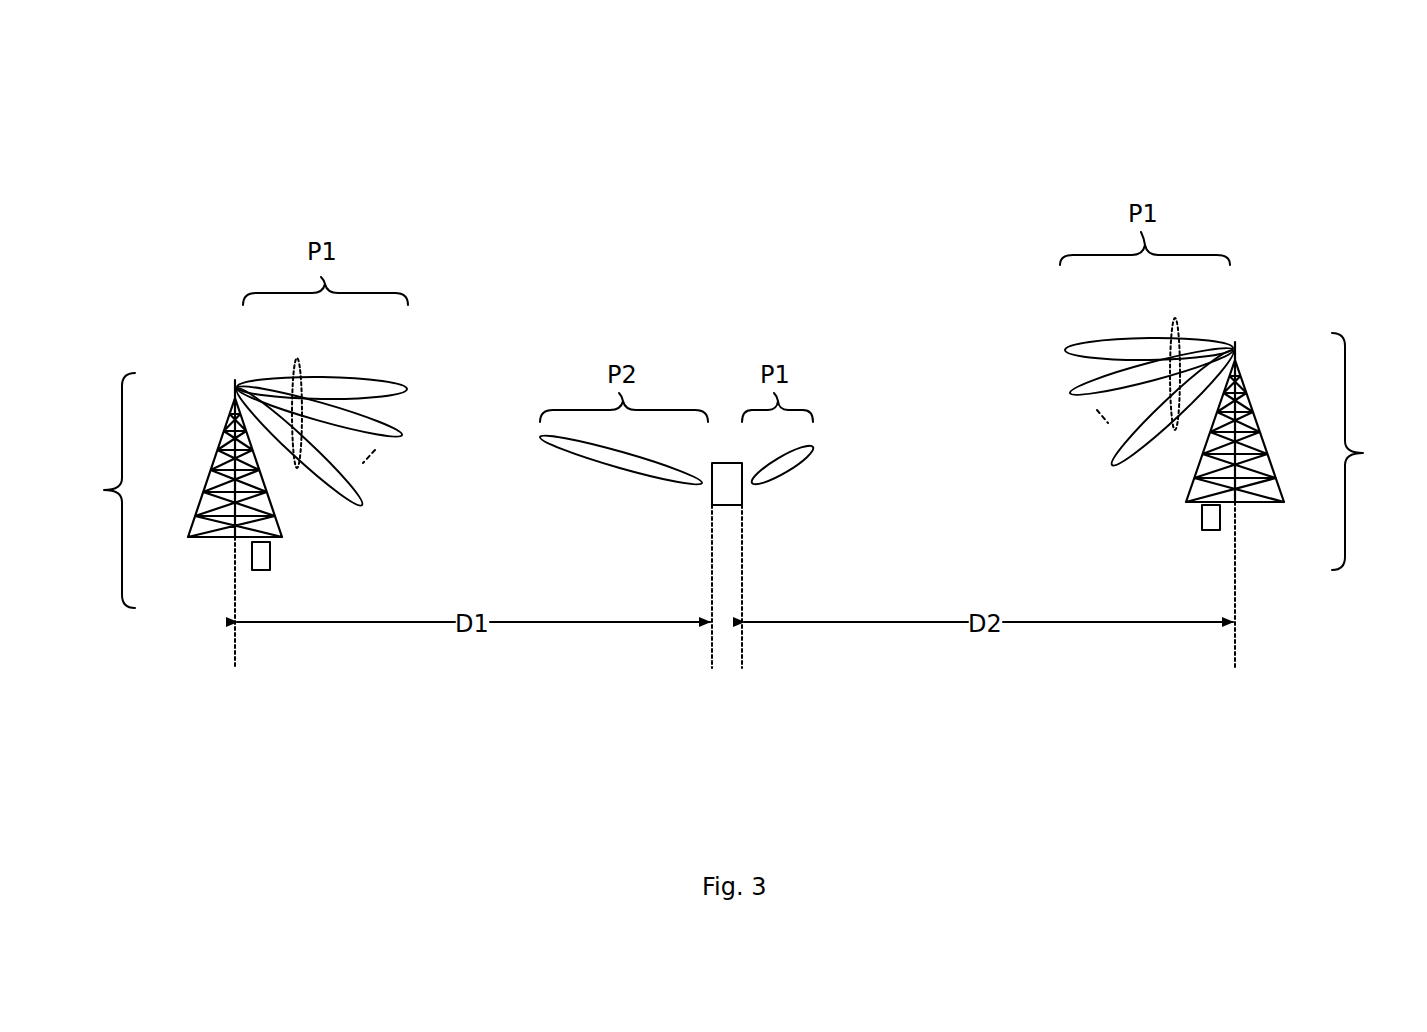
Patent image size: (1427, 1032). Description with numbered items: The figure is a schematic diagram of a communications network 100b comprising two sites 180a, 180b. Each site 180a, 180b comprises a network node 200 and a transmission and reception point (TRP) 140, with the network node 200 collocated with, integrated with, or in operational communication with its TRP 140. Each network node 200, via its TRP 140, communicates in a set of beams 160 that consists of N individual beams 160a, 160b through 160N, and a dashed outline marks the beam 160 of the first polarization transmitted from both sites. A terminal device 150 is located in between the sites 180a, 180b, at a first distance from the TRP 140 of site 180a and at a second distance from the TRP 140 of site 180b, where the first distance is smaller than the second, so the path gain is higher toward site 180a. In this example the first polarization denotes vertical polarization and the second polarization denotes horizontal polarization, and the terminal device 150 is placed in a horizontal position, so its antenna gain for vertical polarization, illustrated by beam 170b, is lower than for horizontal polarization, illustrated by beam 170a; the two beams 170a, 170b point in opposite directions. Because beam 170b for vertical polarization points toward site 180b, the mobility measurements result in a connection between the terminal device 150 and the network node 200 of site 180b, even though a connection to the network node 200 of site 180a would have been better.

The communications network 100b is at (293, 100).
The transmission and reception point 140 is at (233, 393).
The set of beams 160 is at (297, 358).
The individual beam 160a is at (407, 388).
The individual beam 160b is at (402, 435).
The individual beam 160N is at (362, 505).
The terminal device 150 is at (732, 507).
The individual beam 170a is at (620, 473).
The individual beam 170b is at (795, 472).
The site 180a is at (94, 490).
The site 180b is at (1376, 451).
The network node 200 is at (252, 560).